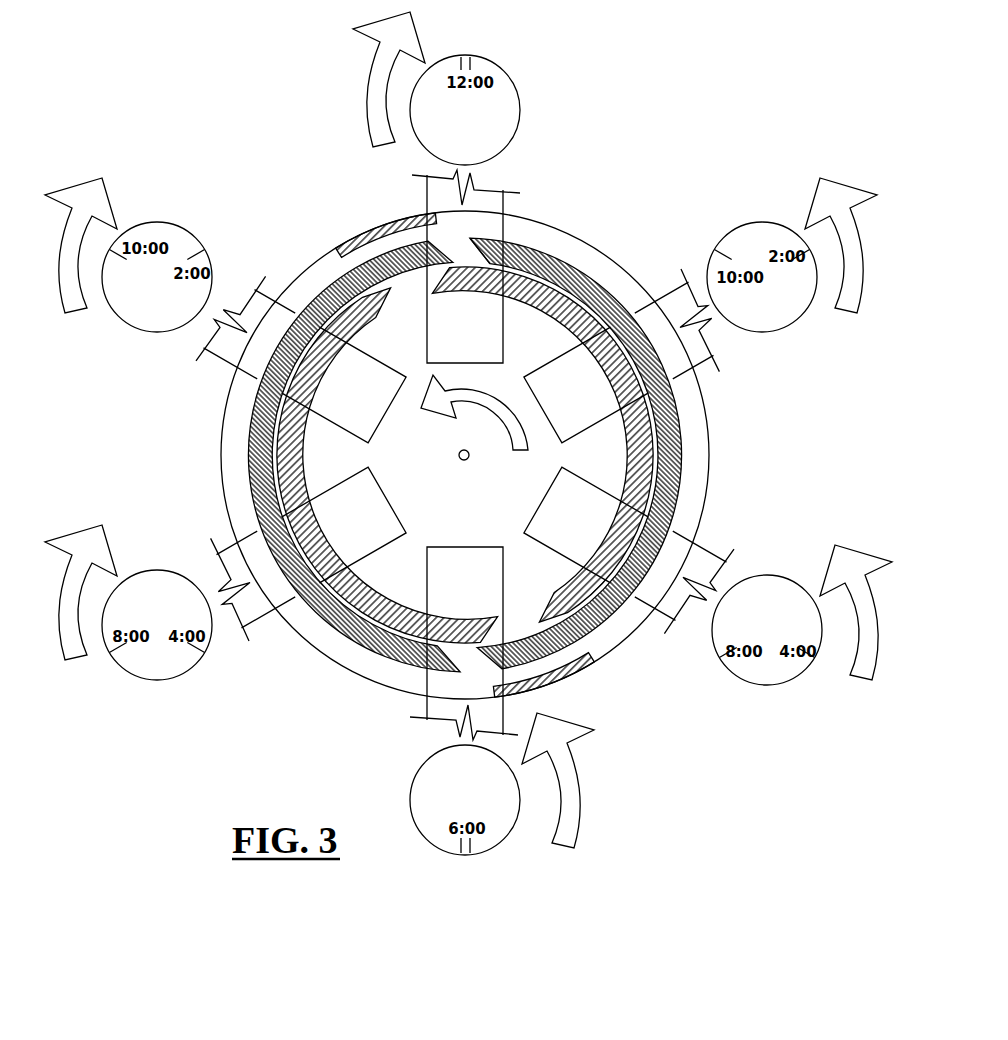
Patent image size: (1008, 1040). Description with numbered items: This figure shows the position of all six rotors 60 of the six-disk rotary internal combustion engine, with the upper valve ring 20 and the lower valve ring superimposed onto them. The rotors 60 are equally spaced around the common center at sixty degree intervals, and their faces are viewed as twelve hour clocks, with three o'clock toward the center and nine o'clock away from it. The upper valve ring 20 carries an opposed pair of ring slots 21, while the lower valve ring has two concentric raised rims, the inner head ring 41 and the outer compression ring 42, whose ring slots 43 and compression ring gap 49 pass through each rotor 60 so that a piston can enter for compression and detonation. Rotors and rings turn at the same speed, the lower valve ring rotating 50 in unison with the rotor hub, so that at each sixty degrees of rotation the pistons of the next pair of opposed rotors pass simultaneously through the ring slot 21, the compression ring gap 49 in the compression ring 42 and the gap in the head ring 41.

The upper valve ring 20 is at (580, 272).
The ring slot 21 is at (497, 243).
The head ring 41 is at (276, 470).
The compression ring 42 is at (350, 240).
The ring slot 43 is at (337, 280).
The compression ring gap 49 is at (423, 214).
The rotation of lower valve ring 50 is at (477, 400).
The rotor 60 is at (426, 203).